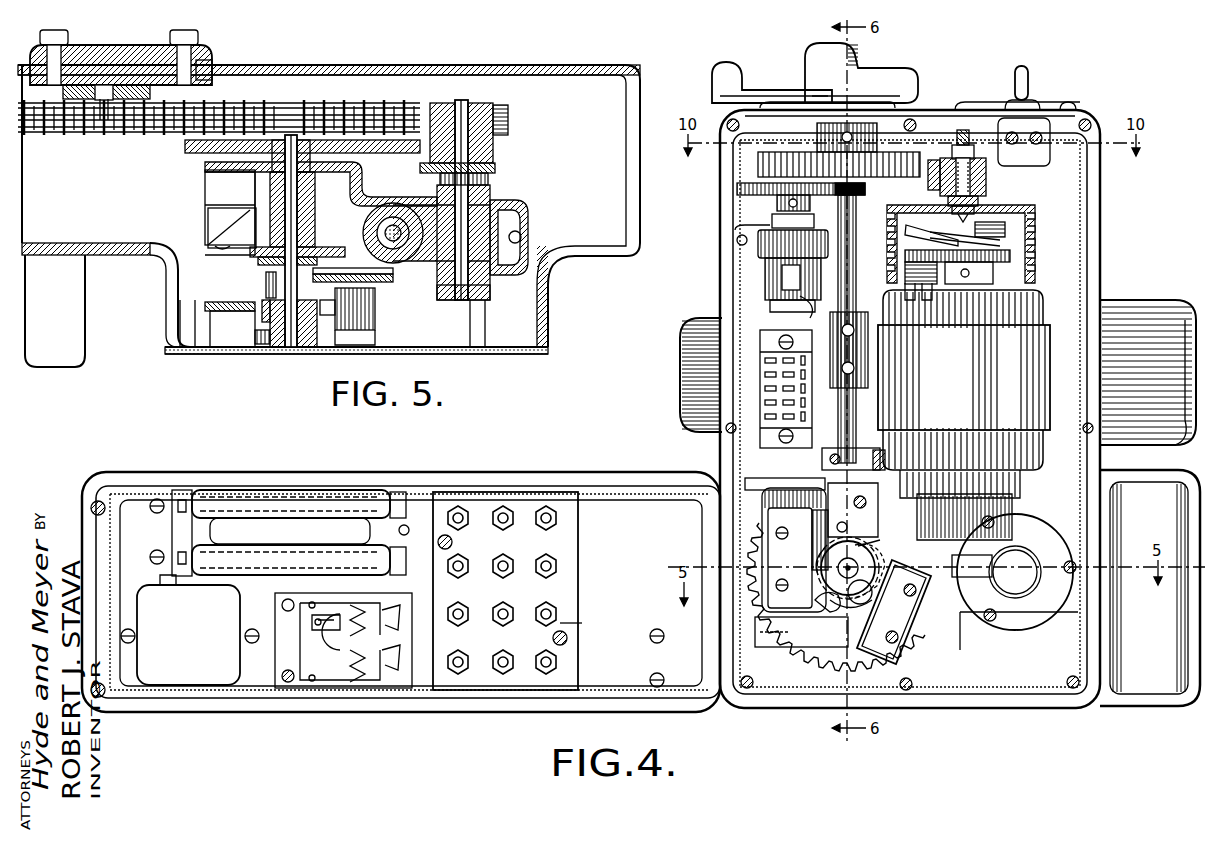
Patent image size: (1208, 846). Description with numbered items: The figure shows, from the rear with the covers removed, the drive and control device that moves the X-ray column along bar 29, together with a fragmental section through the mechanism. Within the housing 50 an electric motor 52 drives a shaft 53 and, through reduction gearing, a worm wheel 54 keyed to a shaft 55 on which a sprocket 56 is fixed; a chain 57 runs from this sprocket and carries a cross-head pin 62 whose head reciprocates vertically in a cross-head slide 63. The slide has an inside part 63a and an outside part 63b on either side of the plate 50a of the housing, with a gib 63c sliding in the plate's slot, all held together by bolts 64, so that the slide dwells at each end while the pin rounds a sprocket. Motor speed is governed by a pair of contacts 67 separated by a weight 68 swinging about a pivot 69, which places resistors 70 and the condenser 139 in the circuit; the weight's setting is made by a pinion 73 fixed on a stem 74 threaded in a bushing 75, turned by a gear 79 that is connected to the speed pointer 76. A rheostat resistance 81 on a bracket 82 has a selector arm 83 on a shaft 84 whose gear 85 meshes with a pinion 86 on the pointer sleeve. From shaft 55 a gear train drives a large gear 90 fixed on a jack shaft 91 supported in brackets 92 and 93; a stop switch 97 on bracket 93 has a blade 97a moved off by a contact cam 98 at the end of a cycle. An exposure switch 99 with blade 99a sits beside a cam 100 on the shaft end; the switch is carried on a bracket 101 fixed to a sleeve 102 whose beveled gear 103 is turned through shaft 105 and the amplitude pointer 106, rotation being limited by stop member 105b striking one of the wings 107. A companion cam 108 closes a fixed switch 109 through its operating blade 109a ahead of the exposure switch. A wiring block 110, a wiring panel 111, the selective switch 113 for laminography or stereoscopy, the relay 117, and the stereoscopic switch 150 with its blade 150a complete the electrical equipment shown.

In FIG. 4, the bar 29 is at (1143, 320).
In FIG. 4, the housing 50 is at (722, 296).
In FIG. 5, the plate 50a is at (329, 142).
In FIG. 4, the electric motor 52 is at (964, 394).
In FIG. 5, the shaft 53 is at (395, 230).
In FIG. 5, the worm wheel 54 is at (512, 228).
In FIG. 5, the shaft 55 is at (468, 105).
In FIG. 5, the sprocket 56 is at (498, 130).
In FIG. 5, the chain 57 is at (335, 104).
In FIG. 5, the cross-head pin 62 is at (100, 110).
In FIG. 5, the cross-head slide 63 is at (116, 62).
In FIG. 5, the inside part of cross-head slide 63a is at (205, 82).
In FIG. 5, the outside part of cross-head slide 63b is at (200, 48).
In FIG. 5, the gib 63c is at (212, 70).
In FIG. 5, the bolts 64 is at (58, 52).
In FIG. 4, the contacts 67 is at (915, 290).
In FIG. 4, the weight 68 is at (905, 225).
In FIG. 4, the pivot 69 is at (930, 232).
In FIG. 4, the resistors 70 is at (238, 492).
In FIG. 4, the pinion 73 is at (988, 187).
In FIG. 4, the stem 74 is at (962, 150).
In FIG. 4, the bushing 75 is at (985, 202).
In FIG. 4, the pointer 76 is at (785, 95).
In FIG. 4, the gear 79 is at (760, 162).
In FIG. 4, the resistance 81 is at (760, 266).
In FIG. 4, the bracket 82 is at (722, 228).
In FIG. 4, the resistance-selector arm 83 is at (800, 305).
In FIG. 4, the shaft 84 is at (780, 216).
In FIG. 4, the gear 85 is at (740, 190).
In FIG. 4, the pinion 86 is at (846, 196).
In FIG. 5, the large gear 90 is at (190, 152).
In FIG. 4, the large gear 90 is at (758, 628).
In FIG. 5, the jack shaft 91 is at (290, 348).
In FIG. 4, the jack shaft 91 is at (838, 572).
In FIG. 5, the bracket 92 is at (378, 282).
In FIG. 4, the bracket 92 is at (772, 505).
In FIG. 5, the bracket 93 is at (356, 172).
In FIG. 4, the bracket 93 is at (997, 572).
In FIG. 5, the stop switch 97 is at (208, 222).
In FIG. 4, the stop switch 97 is at (762, 484).
In FIG. 5, the switch blade 97a is at (217, 255).
In FIG. 5, the contact cam 98 is at (312, 222).
In FIG. 5, the exposure switch 99 is at (358, 315).
In FIG. 4, the exposure switch 99 is at (900, 655).
In FIG. 5, the switch blade 99a is at (345, 322).
In FIG. 4, the switch blade 99a is at (880, 550).
In FIG. 5, the cam 100 is at (268, 302).
In FIG. 4, the cam 100 is at (840, 565).
In FIG. 5, the bracket 101 is at (270, 283).
In FIG. 4, the bracket 101 is at (915, 560).
In FIG. 5, the sleeve 102 is at (275, 338).
In FIG. 5, the beveled gear 103 is at (304, 246).
In FIG. 4, the shaft 105 is at (858, 398).
In FIG. 4, the stop member 105b is at (822, 458).
In FIG. 4, the pointer 106 is at (905, 68).
In FIG. 4, the wings 107 is at (885, 455).
In FIG. 5, the cam 108 is at (320, 340).
In FIG. 4, the cam 108 is at (883, 590).
In FIG. 5, the switch 109 is at (215, 335).
In FIG. 4, the switch 109 is at (780, 520).
In FIG. 4, the operating blade 109a is at (780, 628).
In FIG. 4, the wiring block 110 is at (762, 362).
In FIG. 4, the wiring panel 111 is at (480, 500).
In FIG. 4, the selective switch 113 is at (1030, 80).
In FIG. 4, the relay 117 is at (283, 660).
In FIG. 4, the condenser 139 is at (188, 630).
In FIG. 5, the stereoscopic switch 150 is at (220, 192).
In FIG. 5, the switch blade 150a is at (229, 226).